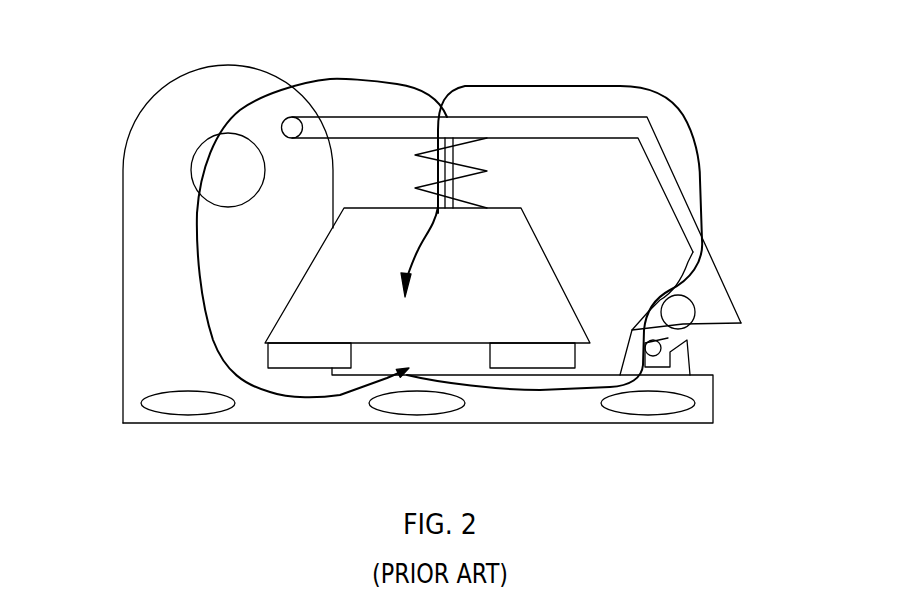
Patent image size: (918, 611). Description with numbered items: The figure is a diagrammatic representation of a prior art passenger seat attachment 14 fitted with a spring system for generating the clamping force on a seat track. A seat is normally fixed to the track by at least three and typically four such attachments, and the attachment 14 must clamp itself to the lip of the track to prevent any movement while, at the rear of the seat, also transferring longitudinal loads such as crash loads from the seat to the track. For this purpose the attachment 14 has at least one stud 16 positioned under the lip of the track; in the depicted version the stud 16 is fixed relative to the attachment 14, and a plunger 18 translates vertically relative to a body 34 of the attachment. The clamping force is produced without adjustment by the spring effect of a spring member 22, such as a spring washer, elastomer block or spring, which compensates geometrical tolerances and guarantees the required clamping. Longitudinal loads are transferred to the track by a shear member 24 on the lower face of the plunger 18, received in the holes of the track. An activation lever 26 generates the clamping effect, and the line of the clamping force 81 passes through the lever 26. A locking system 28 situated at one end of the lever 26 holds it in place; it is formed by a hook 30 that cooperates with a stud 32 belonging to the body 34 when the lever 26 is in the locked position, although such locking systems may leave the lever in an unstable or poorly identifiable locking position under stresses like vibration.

The passenger seat attachment 14 is at (150, 74).
The stud 16 is at (192, 407).
The plunger 18 is at (512, 258).
The spring member 22 is at (487, 171).
The shear member 24 is at (517, 358).
The activation lever 26 is at (570, 128).
The locking system 28 is at (714, 306).
The hook 30 is at (653, 315).
The stud 32 is at (670, 340).
The body 34 is at (160, 236).
The line of the clamping force 81 is at (687, 143).